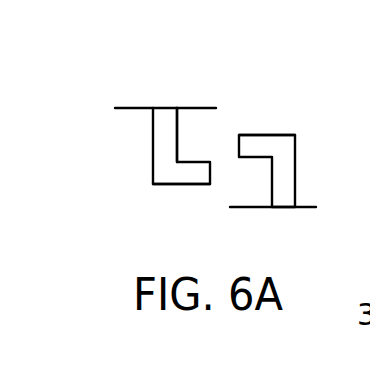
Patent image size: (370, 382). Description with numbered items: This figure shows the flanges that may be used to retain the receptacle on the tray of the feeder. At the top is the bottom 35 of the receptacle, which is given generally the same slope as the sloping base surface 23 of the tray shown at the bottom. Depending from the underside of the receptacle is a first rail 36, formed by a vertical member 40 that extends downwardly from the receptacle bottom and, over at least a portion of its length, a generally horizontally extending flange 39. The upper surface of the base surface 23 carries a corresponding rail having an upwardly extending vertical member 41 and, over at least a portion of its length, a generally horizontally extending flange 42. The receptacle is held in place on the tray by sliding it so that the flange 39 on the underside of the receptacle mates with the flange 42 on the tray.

The sloping base surface 23 is at (312, 207).
The bottom 35 is at (135, 108).
The first rail 36 is at (153, 163).
The horizontally extending flange 39 is at (180, 184).
The vertical member 40 is at (177, 135).
The upwardly extending vertical member 41 is at (295, 167).
The horizontally extending flange 42 is at (267, 135).